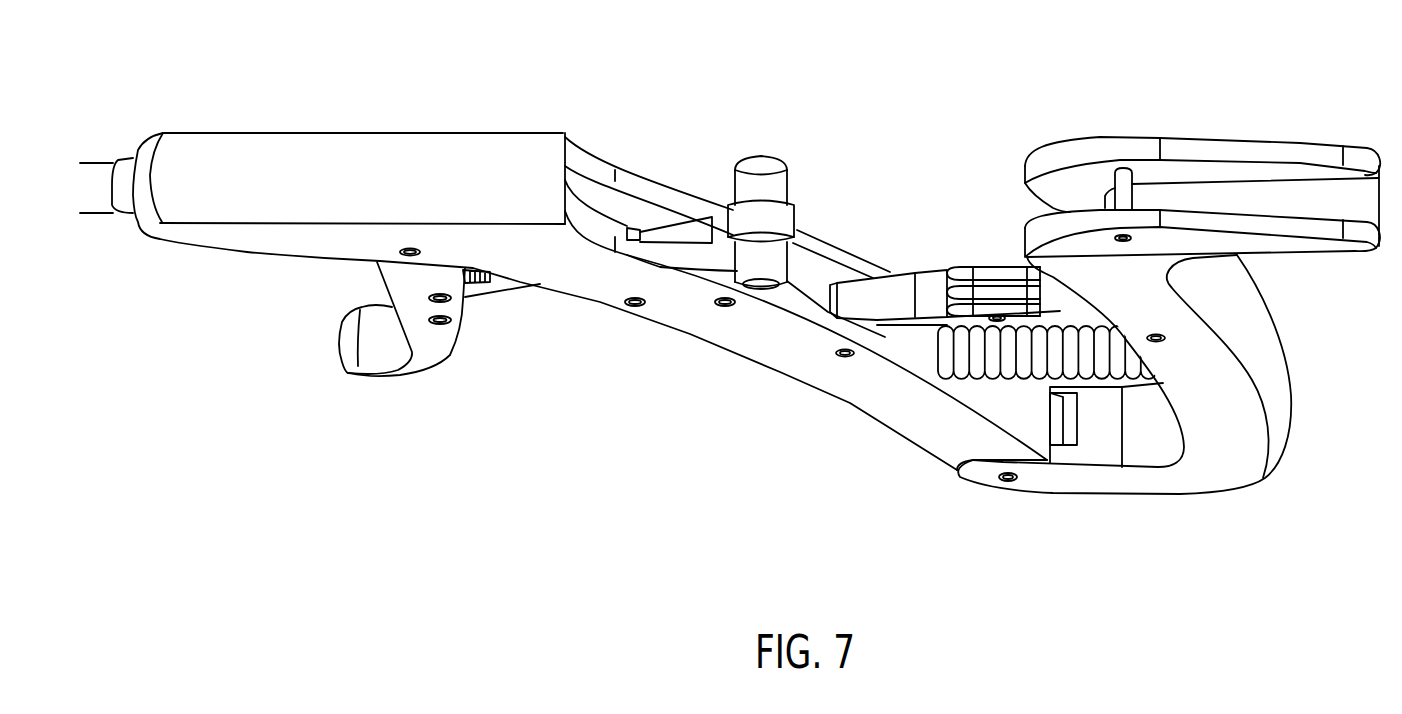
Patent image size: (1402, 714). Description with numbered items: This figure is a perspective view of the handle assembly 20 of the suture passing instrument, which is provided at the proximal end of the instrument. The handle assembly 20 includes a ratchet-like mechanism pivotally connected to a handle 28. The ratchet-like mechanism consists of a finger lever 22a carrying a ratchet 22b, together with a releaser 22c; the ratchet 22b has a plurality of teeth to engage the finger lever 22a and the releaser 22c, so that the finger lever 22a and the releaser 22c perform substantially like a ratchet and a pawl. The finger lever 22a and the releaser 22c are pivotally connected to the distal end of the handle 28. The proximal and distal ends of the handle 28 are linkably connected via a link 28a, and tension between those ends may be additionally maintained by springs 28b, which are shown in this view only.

The handle assembly 20 is at (873, 70).
The finger lever 22a is at (427, 357).
The ratchet 22b is at (487, 288).
The releaser 22c is at (747, 178).
The handle 28 is at (1248, 388).
The link 28a is at (907, 285).
The springs 28b is at (983, 373).